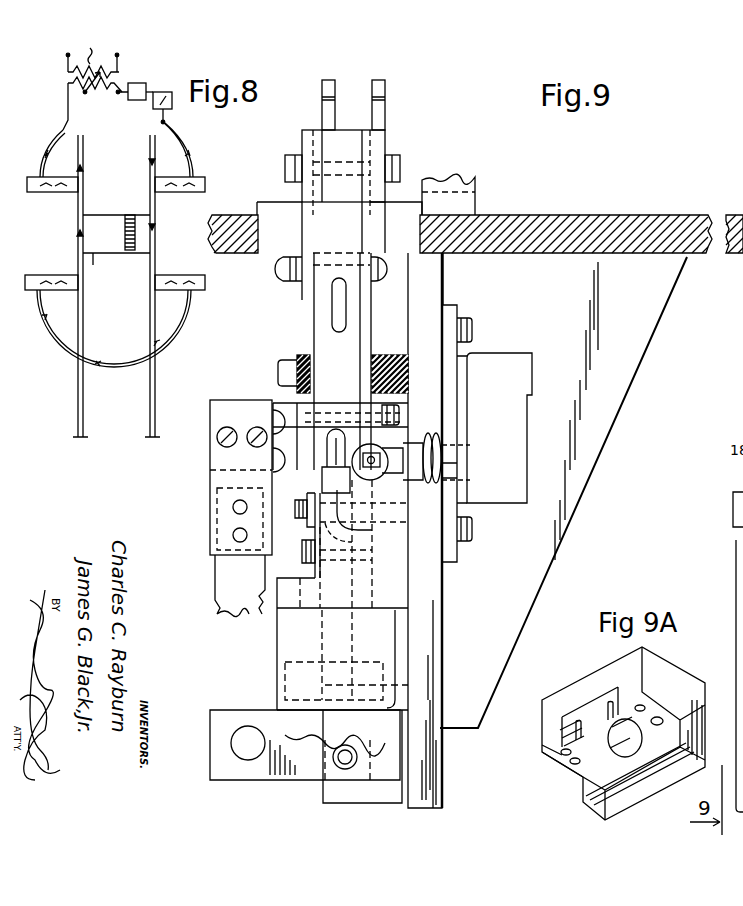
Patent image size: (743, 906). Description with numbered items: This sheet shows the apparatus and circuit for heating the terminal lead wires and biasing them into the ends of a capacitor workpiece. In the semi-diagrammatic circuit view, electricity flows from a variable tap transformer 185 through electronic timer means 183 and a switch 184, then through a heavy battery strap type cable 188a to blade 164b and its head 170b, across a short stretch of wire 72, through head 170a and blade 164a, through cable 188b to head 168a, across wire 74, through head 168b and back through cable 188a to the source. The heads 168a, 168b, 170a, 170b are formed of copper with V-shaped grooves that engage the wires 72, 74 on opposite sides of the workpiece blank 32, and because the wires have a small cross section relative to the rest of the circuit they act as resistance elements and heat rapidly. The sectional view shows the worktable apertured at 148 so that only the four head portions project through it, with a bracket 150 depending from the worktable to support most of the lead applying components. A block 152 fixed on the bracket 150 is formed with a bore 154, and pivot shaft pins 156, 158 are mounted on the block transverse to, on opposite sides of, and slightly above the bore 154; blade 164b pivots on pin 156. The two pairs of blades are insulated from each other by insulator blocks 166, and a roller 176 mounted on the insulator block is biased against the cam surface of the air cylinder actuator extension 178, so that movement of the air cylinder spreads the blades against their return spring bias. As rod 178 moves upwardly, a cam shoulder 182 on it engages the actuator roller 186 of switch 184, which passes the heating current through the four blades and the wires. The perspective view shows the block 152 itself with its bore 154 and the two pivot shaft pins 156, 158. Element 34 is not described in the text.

In FIG. 8, the variable tap transformer 185 is at (61, 79).
In FIG. 8, the battery strap type cable 188a is at (60, 118).
In FIG. 9, the battery strap type cable 188a is at (250, 592).
In FIG. 8, the electronic timer means 183 is at (132, 83).
In FIG. 8, the switch 184 is at (159, 92).
In FIG. 9, the switch 184 is at (508, 384).
In FIG. 8, the head 168b is at (60, 180).
In FIG. 8, the head 170b is at (198, 178).
In FIG. 9, the head 170b is at (322, 108).
In FIG. 8, the head 168a is at (70, 278).
In FIG. 8, the head 170a is at (200, 291).
In FIG. 9, the head 170a is at (385, 112).
In FIG. 8, the threaded shaft 34 is at (128, 256).
In FIG. 8, the workpiece blank 32 is at (90, 266).
In FIG. 8, the battery strap type cable 188b is at (178, 343).
In FIG. 8, the wire 74 is at (82, 395).
In FIG. 8, the wire 72 is at (150, 413).
In FIG. 9, the aperture 148 is at (401, 224).
In FIG. 9, the insulator block 166 is at (338, 196).
In FIG. 9, the roller 176 is at (336, 306).
In FIG. 9, the blade member 164a is at (366, 338).
In FIG. 9, the blade member 164b is at (312, 332).
In FIG. 9, the bracket 150 is at (640, 333).
In FIG. 9, the actuator roller 186 is at (375, 454).
In FIG. 9, the air cylinder actuator extension 178 is at (326, 448).
In FIG. 9, the cam shoulder 182 is at (365, 533).
In FIG. 9, the pivot shaft pin 156 is at (365, 546).
In FIG. 9A, the pivot shaft pin 156 is at (572, 728).
In FIG. 9, the block 152 is at (505, 578).
In FIG. 9A, the block 152 is at (722, 640).
In FIG. 9A, the pivot shaft pin 158 is at (606, 706).
In FIG. 9A, the bore 154 is at (618, 754).